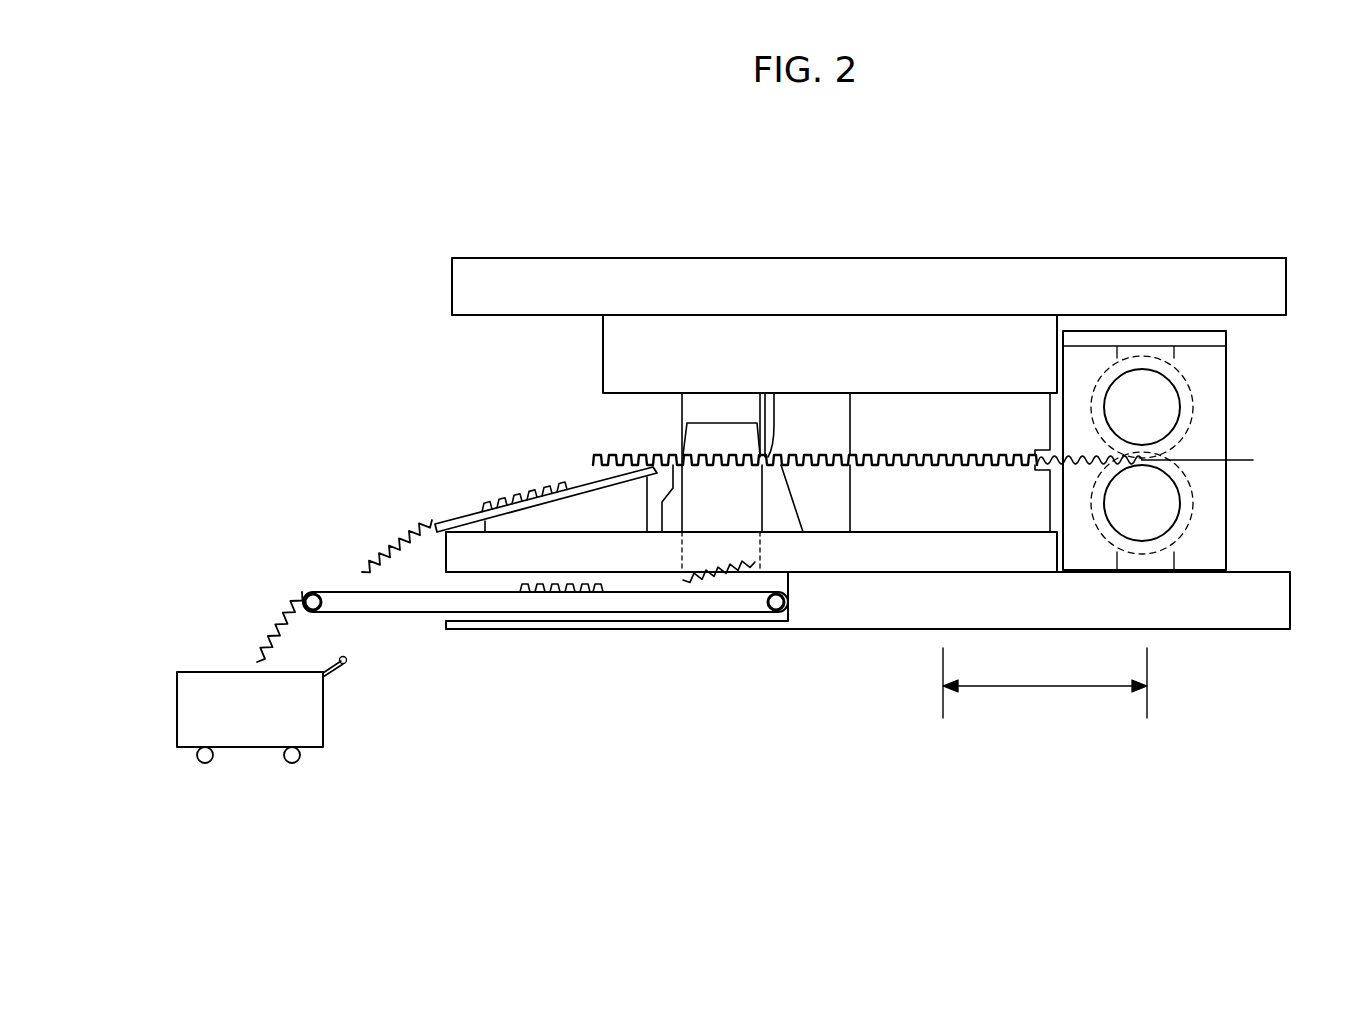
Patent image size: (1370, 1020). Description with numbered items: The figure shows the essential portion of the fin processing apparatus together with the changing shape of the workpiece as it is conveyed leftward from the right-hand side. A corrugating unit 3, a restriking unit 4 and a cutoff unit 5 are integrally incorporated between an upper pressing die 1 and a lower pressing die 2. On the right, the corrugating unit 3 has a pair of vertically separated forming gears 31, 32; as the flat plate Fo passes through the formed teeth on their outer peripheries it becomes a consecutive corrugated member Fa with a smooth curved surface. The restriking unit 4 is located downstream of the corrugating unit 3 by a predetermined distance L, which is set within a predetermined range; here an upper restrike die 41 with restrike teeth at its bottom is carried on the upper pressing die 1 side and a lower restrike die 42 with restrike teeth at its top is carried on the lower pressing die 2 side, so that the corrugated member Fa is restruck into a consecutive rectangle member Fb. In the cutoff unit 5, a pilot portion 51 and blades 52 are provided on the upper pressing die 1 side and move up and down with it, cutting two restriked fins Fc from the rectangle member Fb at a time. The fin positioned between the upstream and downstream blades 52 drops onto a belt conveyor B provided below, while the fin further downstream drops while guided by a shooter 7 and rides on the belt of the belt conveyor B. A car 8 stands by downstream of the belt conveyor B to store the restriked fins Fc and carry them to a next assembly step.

The upper pressing die 1 is at (1220, 268).
The lower pressing die 2 is at (1245, 617).
The corrugating unit 3 is at (1091, 352).
The forming gear 31 is at (1162, 397).
The forming gear 32 is at (1150, 512).
The restriking unit 4 is at (973, 368).
The upper restrike die 41 is at (933, 418).
The lower restrike die 42 is at (935, 498).
The cutoff unit 5 is at (749, 350).
The pilot portion 51 is at (773, 410).
The blades 52 is at (705, 407).
The shooter 7 is at (587, 480).
The car 8 is at (172, 680).
The belt conveyor B is at (388, 613).
The consecutive corrugated member Fa is at (1090, 452).
The consecutive rectangle member Fb is at (825, 450).
The restriked fin Fc is at (405, 530).
The flat plate Fo is at (1238, 458).
The predetermined distance L is at (1045, 683).